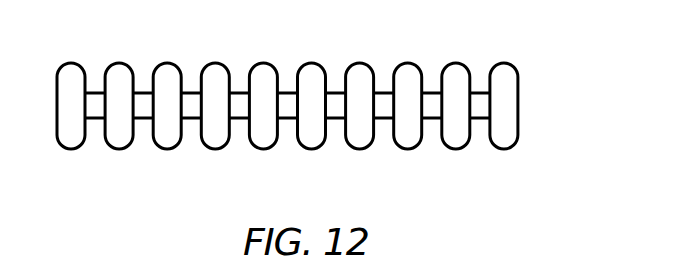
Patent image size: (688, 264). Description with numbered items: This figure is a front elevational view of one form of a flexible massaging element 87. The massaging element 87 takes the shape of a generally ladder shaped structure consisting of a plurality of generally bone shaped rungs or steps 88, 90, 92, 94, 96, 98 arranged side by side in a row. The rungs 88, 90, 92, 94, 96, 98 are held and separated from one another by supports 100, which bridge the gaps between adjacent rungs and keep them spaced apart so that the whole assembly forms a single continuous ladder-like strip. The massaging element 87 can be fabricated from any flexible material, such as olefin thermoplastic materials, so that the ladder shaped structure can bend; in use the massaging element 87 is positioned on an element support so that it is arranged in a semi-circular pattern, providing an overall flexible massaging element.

The massaging element 87 is at (328, 110).
The rung 88 is at (72, 150).
The rung 90 is at (168, 150).
The rung 92 is at (263, 62).
The rung 94 is at (360, 150).
The rung 96 is at (455, 150).
The rung 98 is at (502, 150).
The support 100 is at (143, 120).